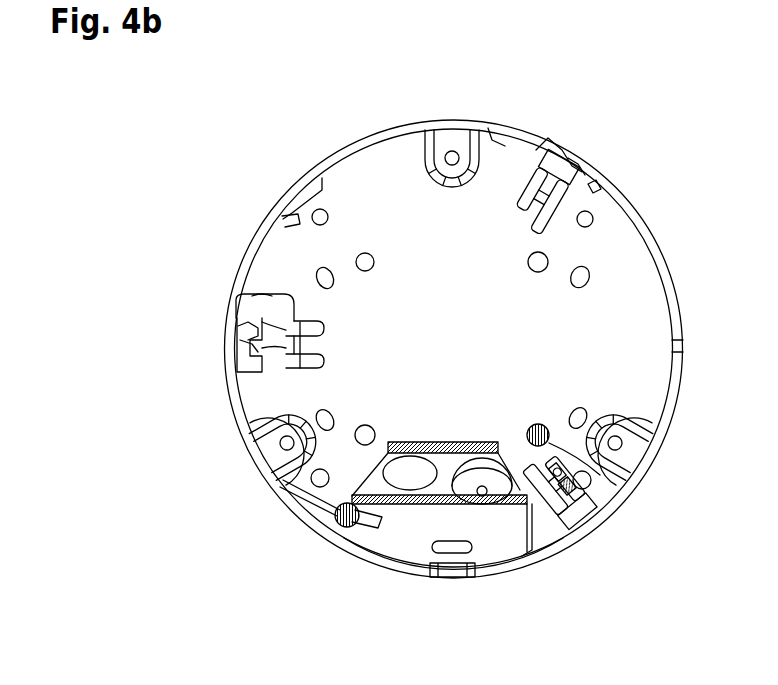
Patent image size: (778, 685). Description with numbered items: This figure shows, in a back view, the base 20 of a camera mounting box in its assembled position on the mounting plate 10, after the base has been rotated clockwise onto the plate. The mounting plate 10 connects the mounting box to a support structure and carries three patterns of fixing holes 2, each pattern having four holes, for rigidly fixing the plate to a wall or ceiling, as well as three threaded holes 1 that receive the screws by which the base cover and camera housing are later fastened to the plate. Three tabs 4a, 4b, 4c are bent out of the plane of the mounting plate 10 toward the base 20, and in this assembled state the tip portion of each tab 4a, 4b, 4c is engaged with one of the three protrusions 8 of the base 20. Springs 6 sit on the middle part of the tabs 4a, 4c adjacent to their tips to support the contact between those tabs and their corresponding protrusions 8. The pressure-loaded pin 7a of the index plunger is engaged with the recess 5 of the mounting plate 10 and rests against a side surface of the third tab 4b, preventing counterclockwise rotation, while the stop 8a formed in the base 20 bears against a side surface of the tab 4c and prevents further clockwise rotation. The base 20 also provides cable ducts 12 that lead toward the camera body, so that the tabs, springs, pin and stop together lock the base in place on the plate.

The threaded hole 1 is at (452, 150).
The fixing hole 2 is at (319, 273).
The tab 4a is at (558, 173).
The tab 4b is at (555, 533).
The tab 4c is at (255, 343).
The recess 5 is at (600, 515).
The spring 6 is at (535, 175).
The pressure-loaded pin 7a is at (568, 531).
The protrusion 8 is at (578, 165).
The stop 8a is at (263, 295).
The mounting plate 10 is at (372, 182).
The cable duct 12 is at (420, 480).
The base 20 is at (296, 192).